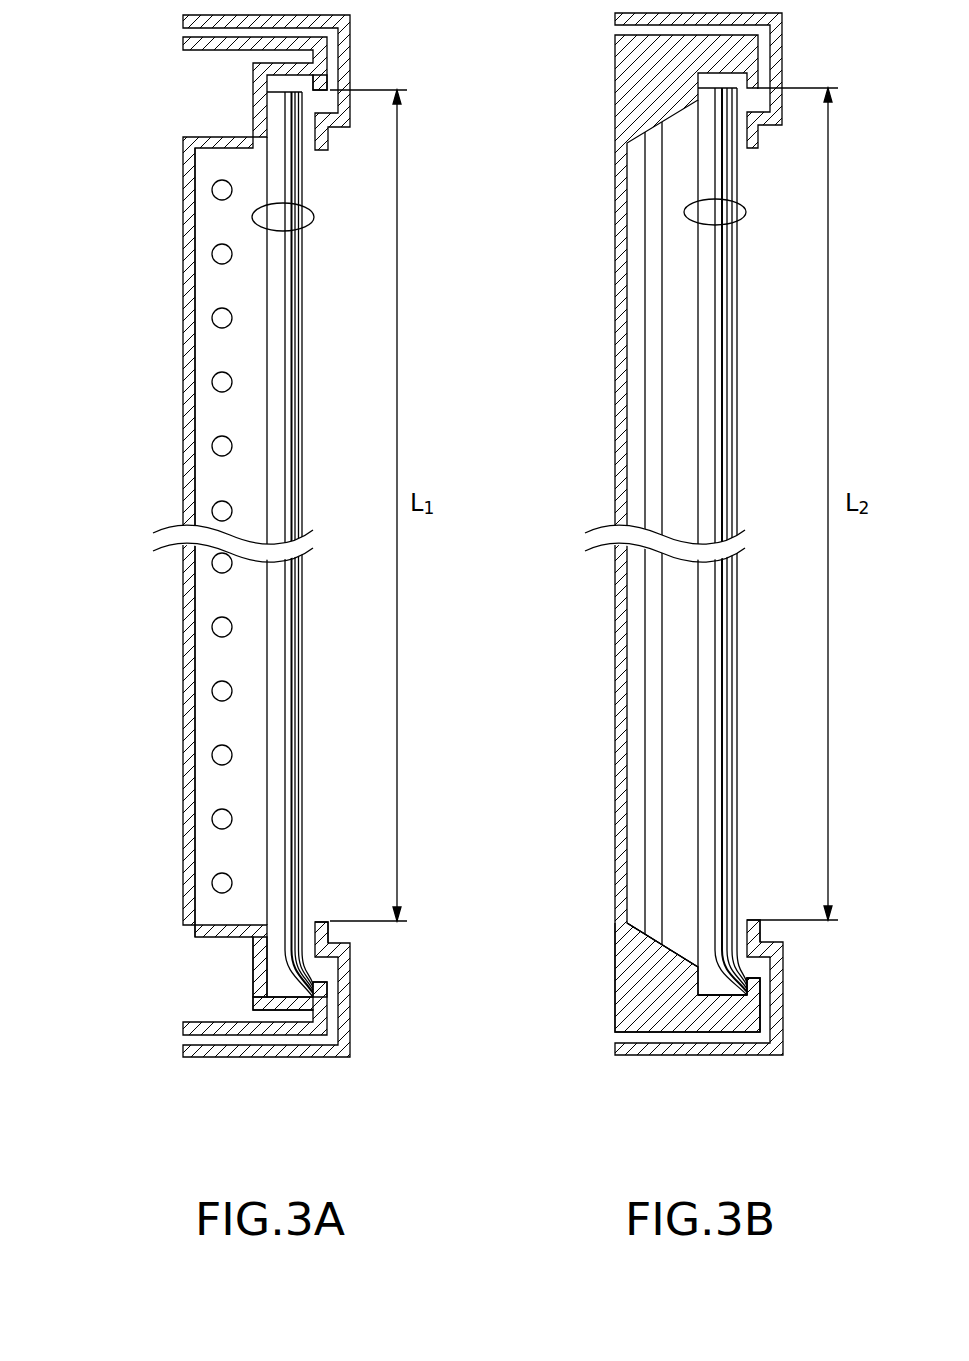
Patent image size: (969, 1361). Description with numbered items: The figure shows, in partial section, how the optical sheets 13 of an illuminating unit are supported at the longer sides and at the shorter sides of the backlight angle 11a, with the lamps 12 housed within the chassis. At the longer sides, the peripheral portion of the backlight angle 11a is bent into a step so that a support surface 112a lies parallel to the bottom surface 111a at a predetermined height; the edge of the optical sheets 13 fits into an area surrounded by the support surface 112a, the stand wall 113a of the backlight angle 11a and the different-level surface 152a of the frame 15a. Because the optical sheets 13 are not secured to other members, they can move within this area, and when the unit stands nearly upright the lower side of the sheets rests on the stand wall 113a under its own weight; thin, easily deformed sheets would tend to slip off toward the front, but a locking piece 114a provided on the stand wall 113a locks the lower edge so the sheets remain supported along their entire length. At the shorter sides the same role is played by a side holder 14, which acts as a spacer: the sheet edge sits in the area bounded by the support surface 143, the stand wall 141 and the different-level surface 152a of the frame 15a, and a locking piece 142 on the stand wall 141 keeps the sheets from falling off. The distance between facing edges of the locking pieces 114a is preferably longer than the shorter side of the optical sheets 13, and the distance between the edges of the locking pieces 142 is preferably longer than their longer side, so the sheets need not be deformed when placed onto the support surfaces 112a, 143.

In FIG. 3A, the backlight angle 11a is at (184, 285).
In FIG. 3B, the backlight angle 11a is at (618, 285).
In FIG. 3A, the bottom surface 111a is at (202, 425).
In FIG. 3A, the support surface 112a is at (265, 962).
In FIG. 3A, the stand wall 113a is at (283, 1005).
In FIG. 3A, the locking piece 114a is at (328, 988).
In FIG. 3A, the lamp 12 is at (211, 186).
In FIG. 3B, the lamp 12 is at (645, 187).
In FIG. 3A, the optical sheet 13 is at (312, 205).
In FIG. 3B, the optical sheet 13 is at (740, 200).
In FIG. 3B, the side holder 14 is at (690, 1033).
In FIG. 3B, the stand wall 141 is at (772, 965).
In FIG. 3B, the locking piece 142 is at (760, 975).
In FIG. 3B, the support surface 143 is at (703, 968).
In FIG. 3A, the frame 15a is at (205, 1058).
In FIG. 3B, the frame 15a is at (638, 1056).
In FIG. 3A, the different-level surface 152a is at (312, 922).
In FIG. 3B, the different-level surface 152a is at (747, 922).